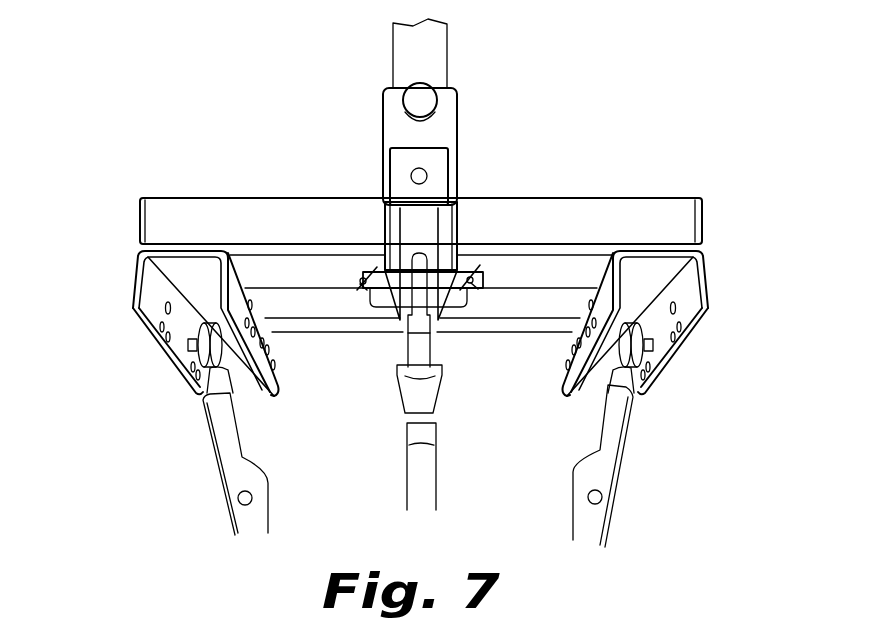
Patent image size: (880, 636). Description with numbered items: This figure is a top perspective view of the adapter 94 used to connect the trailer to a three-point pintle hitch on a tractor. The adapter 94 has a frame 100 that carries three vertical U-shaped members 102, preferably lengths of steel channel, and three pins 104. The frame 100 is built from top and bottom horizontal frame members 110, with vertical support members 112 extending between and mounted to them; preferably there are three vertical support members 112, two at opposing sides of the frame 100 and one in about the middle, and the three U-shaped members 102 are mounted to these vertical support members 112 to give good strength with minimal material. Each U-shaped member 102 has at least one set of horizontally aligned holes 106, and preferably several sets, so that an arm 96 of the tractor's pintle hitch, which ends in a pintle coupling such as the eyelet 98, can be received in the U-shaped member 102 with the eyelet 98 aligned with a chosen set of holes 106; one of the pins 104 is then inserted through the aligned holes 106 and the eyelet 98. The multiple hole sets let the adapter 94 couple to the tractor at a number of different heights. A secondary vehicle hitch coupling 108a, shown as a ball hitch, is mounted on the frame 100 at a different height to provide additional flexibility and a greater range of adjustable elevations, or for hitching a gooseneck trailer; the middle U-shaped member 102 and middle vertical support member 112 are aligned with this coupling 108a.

The adapter 94 is at (692, 186).
The arms 96 is at (406, 484).
The eyelet 98 is at (185, 366).
The frame 100 is at (708, 228).
The U-shaped members 102 is at (385, 230).
The pins 104 is at (208, 328).
The horizontally aligned holes 106 is at (160, 316).
The secondary vehicle hitch coupling 108a is at (442, 100).
The horizontal frame members 110 is at (565, 198).
The vertical support members 112 is at (375, 303).